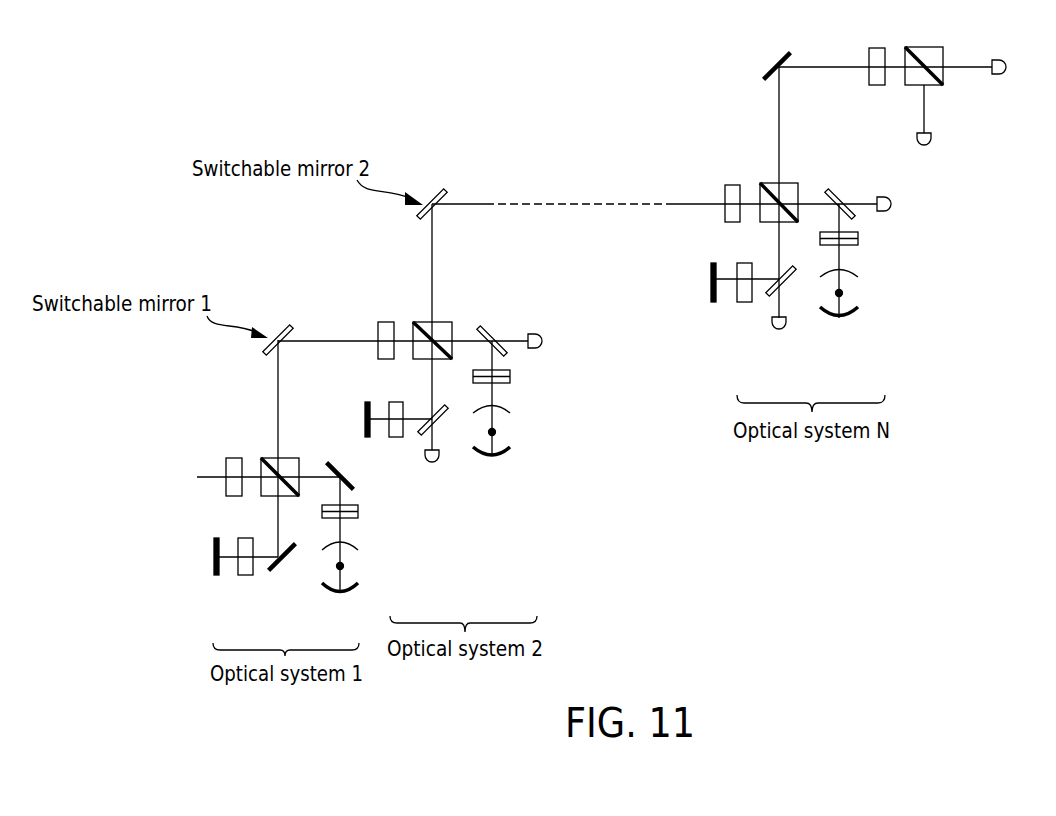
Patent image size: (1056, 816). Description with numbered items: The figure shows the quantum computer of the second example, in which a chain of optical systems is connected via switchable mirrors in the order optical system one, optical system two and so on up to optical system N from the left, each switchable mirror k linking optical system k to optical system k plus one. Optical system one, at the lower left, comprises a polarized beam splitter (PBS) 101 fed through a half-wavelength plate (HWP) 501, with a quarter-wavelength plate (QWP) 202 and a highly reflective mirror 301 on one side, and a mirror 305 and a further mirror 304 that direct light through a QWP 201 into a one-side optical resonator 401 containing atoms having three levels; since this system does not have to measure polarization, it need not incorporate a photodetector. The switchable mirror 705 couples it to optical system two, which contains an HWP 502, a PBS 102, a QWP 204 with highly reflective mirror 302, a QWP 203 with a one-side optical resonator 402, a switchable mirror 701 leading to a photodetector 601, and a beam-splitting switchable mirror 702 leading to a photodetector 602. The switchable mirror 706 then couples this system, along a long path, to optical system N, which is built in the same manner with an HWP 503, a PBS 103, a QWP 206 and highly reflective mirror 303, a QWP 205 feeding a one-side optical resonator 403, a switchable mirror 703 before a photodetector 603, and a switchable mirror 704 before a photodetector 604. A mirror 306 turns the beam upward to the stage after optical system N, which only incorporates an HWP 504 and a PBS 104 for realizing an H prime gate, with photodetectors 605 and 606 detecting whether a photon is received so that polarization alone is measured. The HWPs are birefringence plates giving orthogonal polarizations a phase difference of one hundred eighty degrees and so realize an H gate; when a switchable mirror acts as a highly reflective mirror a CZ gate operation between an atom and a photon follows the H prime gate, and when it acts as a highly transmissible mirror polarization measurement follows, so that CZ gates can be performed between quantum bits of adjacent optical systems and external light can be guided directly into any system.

The polarized beam splitter 101 is at (268, 455).
The polarized beam splitter 102 is at (445, 318).
The polarized beam splitter 103 is at (790, 181).
The polarization beam splitter 104 is at (938, 46).
The quarter-wavelength plate 201 is at (360, 513).
The quarter-wavelength plate 202 is at (245, 535).
The quarter-wavelength plate 203 is at (512, 378).
The quarter-wavelength plate 204 is at (390, 400).
The objective lens (optical system N) 205 is at (860, 238).
The lens 206 is at (740, 262).
The highly reflective mirror 301 is at (212, 557).
The highly reflective mirror 302 is at (365, 405).
The highly reflective mirror 303 is at (709, 278).
The highly reflective mirror 304 is at (277, 583).
The mirror 305 is at (329, 461).
The mirror 306 is at (766, 66).
The one-side optical resonator 401 is at (362, 570).
The one-side optical resonator 402 is at (512, 430).
The eye (object to be measured) 403 is at (862, 293).
The half-wavelength plate 501 is at (228, 455).
The half-wavelength plate 502 is at (383, 320).
The half-wavelength plate 503 is at (729, 182).
The quarter-wave plate 504 is at (878, 46).
The photodetector 601 is at (442, 466).
The photodetector 602 is at (544, 348).
The photodetector 603 is at (789, 330).
The photodetector 604 is at (892, 211).
The photodetector 605 is at (934, 142).
The photodetector 606 is at (1003, 77).
The switchable mirror 701 is at (421, 436).
The switchable mirror 702 is at (491, 328).
The beam splitter 703 is at (771, 300).
The beam splitter 704 is at (836, 190).
The switchable mirror 1 705 is at (295, 324).
The switchable mirror 2 706 is at (445, 190).